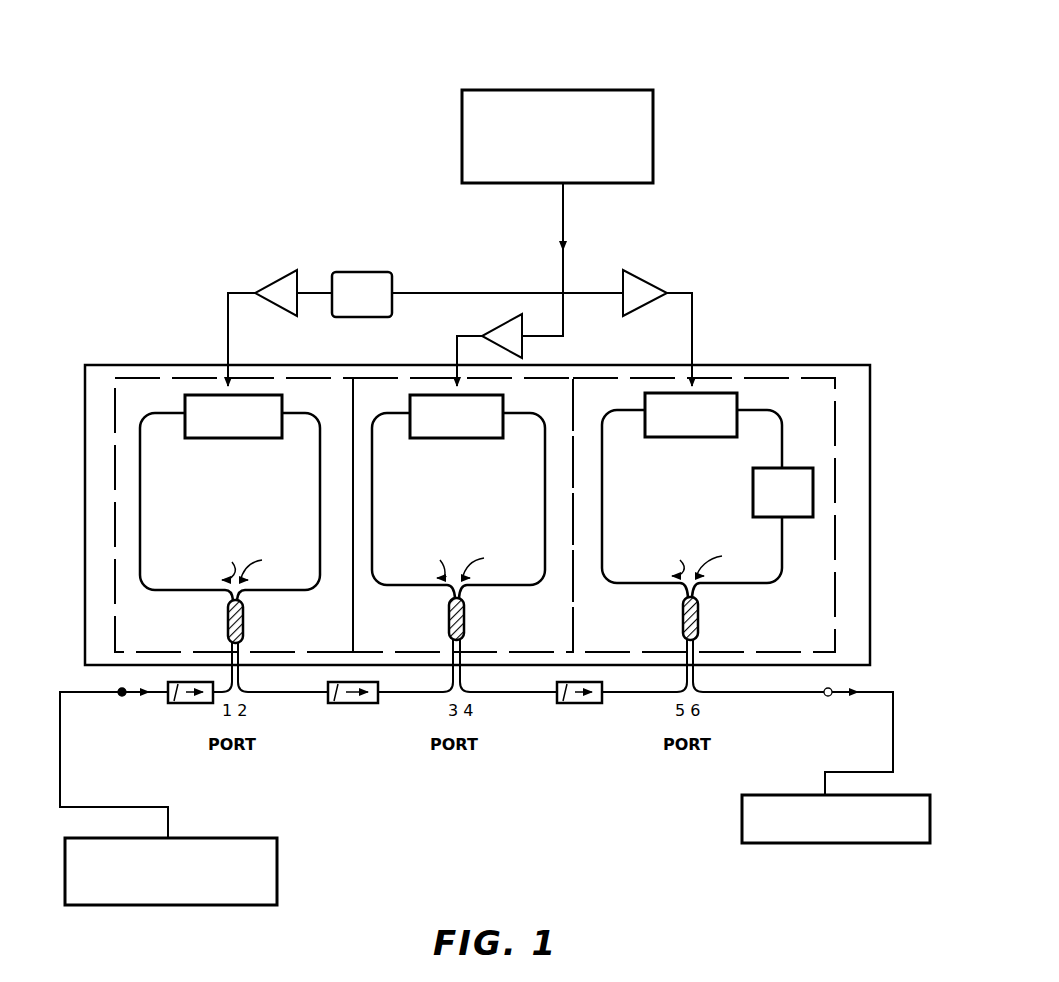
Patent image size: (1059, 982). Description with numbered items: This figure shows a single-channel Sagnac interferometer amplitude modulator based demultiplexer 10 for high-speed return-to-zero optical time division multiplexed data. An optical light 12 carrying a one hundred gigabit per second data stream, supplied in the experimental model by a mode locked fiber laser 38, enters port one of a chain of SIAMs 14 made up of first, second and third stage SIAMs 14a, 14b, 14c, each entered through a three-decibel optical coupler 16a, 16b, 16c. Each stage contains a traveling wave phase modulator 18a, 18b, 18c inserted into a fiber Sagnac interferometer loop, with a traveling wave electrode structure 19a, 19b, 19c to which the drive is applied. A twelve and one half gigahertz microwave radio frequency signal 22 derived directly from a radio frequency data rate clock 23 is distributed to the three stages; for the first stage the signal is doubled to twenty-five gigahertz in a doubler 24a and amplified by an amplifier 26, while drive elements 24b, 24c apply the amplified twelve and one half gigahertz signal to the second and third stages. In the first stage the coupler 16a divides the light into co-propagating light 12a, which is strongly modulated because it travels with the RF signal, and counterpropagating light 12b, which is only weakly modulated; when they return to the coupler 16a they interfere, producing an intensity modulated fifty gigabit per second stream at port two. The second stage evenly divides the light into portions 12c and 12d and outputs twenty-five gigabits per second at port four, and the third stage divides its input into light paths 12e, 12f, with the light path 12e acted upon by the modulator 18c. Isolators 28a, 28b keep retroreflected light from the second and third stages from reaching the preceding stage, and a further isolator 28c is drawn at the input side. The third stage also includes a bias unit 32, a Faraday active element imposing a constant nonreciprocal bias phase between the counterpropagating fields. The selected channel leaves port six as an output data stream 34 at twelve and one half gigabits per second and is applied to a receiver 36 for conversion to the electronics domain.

The Sagnac interferometer amplitude modulator based demultiplexer 10 is at (782, 62).
The optical light 12 is at (118, 700).
The co-propagating light 12a is at (212, 561).
The counterpropagating light 12b is at (268, 562).
The divided light portion 12c is at (422, 560).
The divided light portion 12d is at (491, 561).
The light path 12e is at (663, 558).
The co-propagating light path in loop 18c 12f is at (726, 559).
The SIAM chain 14 is at (848, 363).
The first stage SIAM 14a is at (162, 392).
The second stage SIAM 14b is at (392, 389).
The third stage SIAM 14c is at (733, 383).
The 3 dB optical coupler 16a is at (232, 634).
The 3 dB optical coupler 16b is at (453, 634).
The 3 dB optical coupler 16c is at (687, 632).
The traveling wave phase modulator 18a is at (232, 438).
The traveling wave phase modulator 18b is at (457, 438).
The traveling wave phase modulator 18c is at (690, 437).
The traveling wave electrode structure 19a is at (232, 395).
The traveling wave electrode structure 19b is at (460, 395).
The traveling wave electrode structure 19c is at (695, 393).
The microwave radio frequency signal 22 is at (564, 258).
The radio frequency data rate clock 23 is at (654, 130).
The doubler 24a is at (283, 276).
The RF drive element 24b is at (515, 320).
The RF drive element 24c is at (647, 283).
The amplifier 26 is at (362, 272).
The isolator 28a is at (329, 704).
The isolator 28b is at (560, 704).
The input optical isolator 28c is at (165, 704).
The bias unit 32 is at (813, 490).
The output data stream 34 is at (822, 698).
The receiver 36 is at (742, 822).
The mode locked fiber laser 38 is at (278, 887).